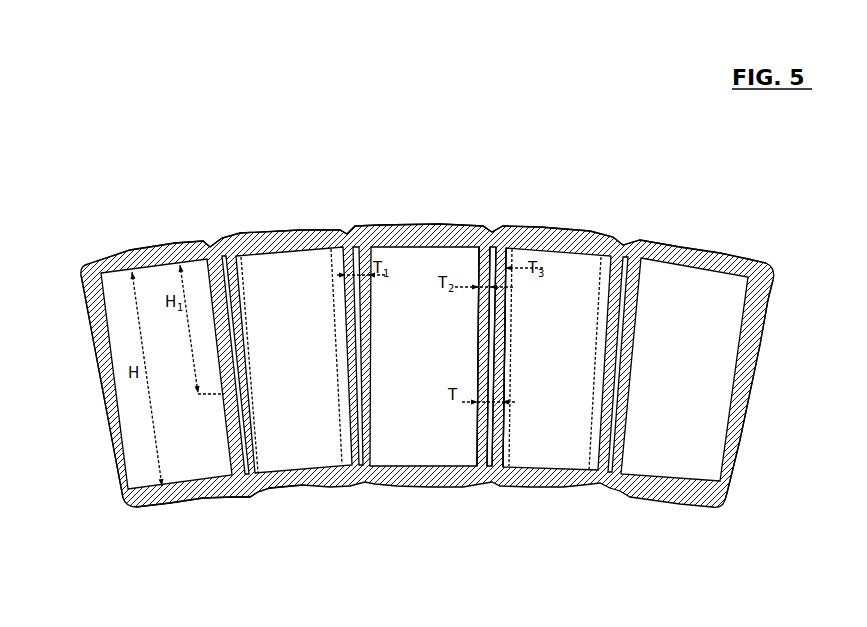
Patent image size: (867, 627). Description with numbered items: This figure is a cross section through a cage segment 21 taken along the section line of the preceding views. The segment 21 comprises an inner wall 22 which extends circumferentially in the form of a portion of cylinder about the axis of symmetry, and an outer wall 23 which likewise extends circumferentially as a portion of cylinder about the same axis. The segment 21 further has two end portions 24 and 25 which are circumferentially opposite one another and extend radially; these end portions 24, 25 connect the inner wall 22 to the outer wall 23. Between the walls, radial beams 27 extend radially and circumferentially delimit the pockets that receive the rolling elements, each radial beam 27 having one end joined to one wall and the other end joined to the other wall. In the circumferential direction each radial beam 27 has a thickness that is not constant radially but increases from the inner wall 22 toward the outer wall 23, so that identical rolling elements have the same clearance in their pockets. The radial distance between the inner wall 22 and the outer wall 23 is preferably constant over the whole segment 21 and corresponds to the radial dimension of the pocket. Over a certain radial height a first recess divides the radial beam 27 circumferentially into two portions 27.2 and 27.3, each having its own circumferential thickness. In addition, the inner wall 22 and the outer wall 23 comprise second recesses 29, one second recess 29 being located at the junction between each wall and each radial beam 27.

The segment 21 is at (383, 162).
The inner wall 22 is at (176, 503).
The outer wall 23 is at (661, 248).
The end portion 24 is at (93, 378).
The end portion 25 is at (766, 318).
The radial beam 27 is at (493, 483).
The portion of the radial beam 27.2 is at (477, 292).
The portion of the radial beam 27.3 is at (504, 292).
The second recess 29 is at (243, 495).